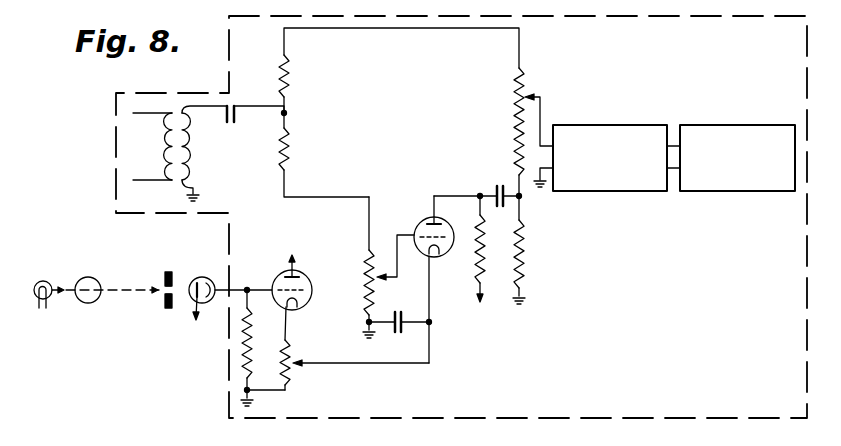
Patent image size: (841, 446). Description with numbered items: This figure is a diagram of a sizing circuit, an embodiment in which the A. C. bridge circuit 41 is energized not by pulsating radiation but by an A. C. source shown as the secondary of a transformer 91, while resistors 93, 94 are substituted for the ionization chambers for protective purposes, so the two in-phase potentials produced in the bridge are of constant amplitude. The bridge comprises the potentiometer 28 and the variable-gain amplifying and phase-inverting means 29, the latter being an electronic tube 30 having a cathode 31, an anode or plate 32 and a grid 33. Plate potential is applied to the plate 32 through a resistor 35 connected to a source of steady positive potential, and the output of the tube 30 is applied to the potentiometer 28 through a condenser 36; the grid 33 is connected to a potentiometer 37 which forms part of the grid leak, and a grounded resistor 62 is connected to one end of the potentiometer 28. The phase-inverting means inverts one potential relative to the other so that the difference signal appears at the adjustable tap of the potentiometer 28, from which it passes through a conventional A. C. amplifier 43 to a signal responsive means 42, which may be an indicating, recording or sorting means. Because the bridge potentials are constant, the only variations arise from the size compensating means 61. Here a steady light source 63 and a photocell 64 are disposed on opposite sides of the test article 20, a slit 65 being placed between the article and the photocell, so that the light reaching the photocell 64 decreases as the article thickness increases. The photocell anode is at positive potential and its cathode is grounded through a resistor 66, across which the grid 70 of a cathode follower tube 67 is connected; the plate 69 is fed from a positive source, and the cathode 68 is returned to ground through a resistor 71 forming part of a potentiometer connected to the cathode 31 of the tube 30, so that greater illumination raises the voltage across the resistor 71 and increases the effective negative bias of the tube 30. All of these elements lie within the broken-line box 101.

The broken-line box 101 is at (450, 419).
The steady light source 63 is at (46, 281).
The test article 20 is at (88, 303).
The slit 65 is at (166, 292).
The photocell 64 is at (201, 277).
The cathode follower tube 67 is at (277, 279).
The plate 69 is at (306, 277).
The grid 70 is at (312, 290).
The cathode 68 is at (300, 305).
The resistor 66 is at (250, 357).
The resistor 71 is at (295, 353).
The size compensating means 61 is at (302, 383).
The potentiometer 37 is at (376, 296).
The cathode 31 is at (395, 256).
The electronic tube 30 is at (420, 222).
The variable-gain amplifying and phase-inverting means 29 is at (426, 199).
The anode or plate 32 is at (447, 222).
The grid 33 is at (443, 255).
The condenser 36 is at (498, 186).
The resistor 35 is at (478, 285).
The grounded resistor 62 is at (524, 254).
The potentiometer 28 is at (529, 88).
The A. C. bridge circuit 41 is at (535, 64).
The A. C. amplifier 43 is at (619, 117).
The signal responsive means 42 is at (728, 124).
The resistor 93 is at (290, 72).
The resistor 94 is at (290, 150).
The transformer 91 is at (188, 157).